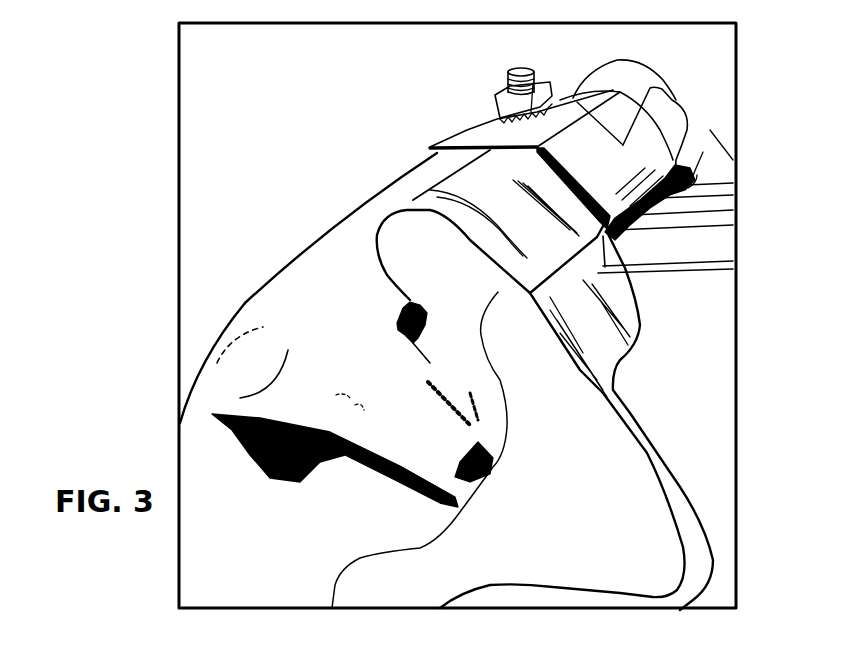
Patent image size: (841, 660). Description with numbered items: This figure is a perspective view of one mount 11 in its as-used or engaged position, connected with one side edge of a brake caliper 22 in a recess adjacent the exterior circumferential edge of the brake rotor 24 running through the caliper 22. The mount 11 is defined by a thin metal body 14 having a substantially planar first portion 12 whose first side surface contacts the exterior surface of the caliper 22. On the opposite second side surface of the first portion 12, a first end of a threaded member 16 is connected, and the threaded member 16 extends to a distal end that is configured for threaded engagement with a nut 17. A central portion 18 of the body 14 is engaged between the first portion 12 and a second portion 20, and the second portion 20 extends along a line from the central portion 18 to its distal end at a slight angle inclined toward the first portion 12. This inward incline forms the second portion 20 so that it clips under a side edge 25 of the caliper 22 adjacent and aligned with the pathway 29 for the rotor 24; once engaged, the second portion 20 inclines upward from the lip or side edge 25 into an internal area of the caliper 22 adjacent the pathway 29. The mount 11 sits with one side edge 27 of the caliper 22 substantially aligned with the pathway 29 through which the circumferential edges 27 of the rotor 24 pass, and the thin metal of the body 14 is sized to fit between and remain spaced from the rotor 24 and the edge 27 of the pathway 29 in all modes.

The mount 11 is at (574, 100).
The first portion 12 is at (470, 133).
The body 14 is at (430, 150).
The threaded member 16 is at (507, 75).
The nut 17 is at (495, 105).
The central portion 18 is at (677, 100).
The second portion 20 is at (628, 220).
The brake caliper 22 is at (267, 303).
The brake rotor 24 is at (703, 152).
The side edge 25 is at (688, 120).
The side edge 27 is at (560, 194).
The pathway 29 is at (645, 197).